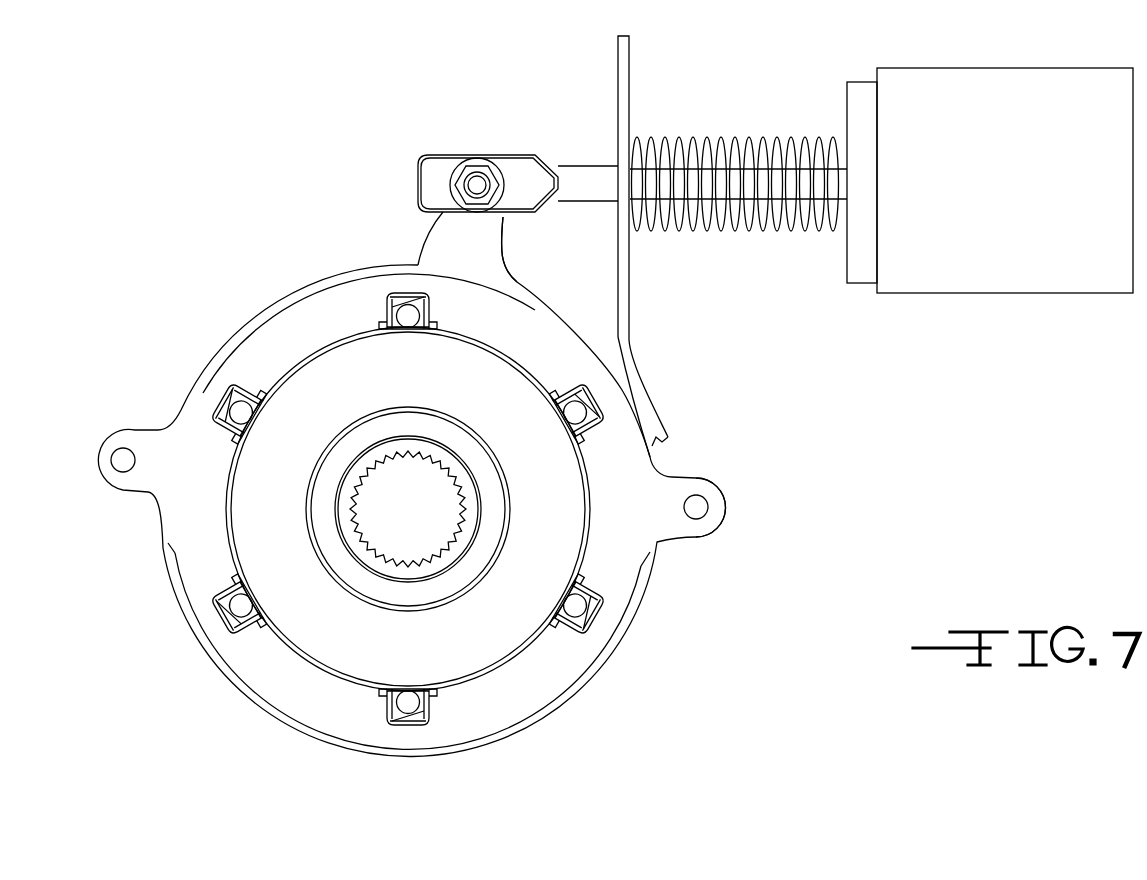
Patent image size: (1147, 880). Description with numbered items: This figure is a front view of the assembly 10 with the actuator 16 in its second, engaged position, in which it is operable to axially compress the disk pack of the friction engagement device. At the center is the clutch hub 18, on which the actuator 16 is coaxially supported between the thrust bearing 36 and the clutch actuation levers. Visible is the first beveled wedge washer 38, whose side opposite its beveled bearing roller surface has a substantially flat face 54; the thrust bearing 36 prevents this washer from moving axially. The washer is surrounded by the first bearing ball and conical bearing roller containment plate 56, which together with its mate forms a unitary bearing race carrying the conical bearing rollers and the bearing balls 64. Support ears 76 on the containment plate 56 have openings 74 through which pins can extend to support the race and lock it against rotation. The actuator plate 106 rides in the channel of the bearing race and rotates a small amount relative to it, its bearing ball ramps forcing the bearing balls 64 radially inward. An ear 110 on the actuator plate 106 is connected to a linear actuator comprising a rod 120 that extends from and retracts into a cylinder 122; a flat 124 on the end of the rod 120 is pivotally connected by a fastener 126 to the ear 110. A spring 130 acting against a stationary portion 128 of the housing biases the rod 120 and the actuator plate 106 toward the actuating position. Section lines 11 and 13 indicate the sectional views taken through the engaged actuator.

The assembly 10 is at (722, 718).
The section line 11 is at (436, 133).
The section line 13 is at (197, 352).
The actuator 16 is at (606, 355).
The clutch hub 18 is at (380, 568).
The thrust bearing 36 is at (318, 524).
The first beveled wedge washer 38 is at (337, 375).
The flat faces 54 is at (408, 509).
The first bearing ball and conical bearing roller containment plate 56 is at (517, 683).
The bearing balls 64 is at (258, 603).
The openings 74 is at (703, 494).
The support ears 76 is at (728, 507).
The actuator plate 106 is at (413, 263).
The ear 110 is at (493, 228).
The rod 120 is at (586, 166).
The cylinder 122 is at (1028, 238).
The flat 124 is at (522, 172).
The fastener 126 is at (477, 183).
The stationary portion 128 is at (631, 63).
The spring 130 is at (708, 140).